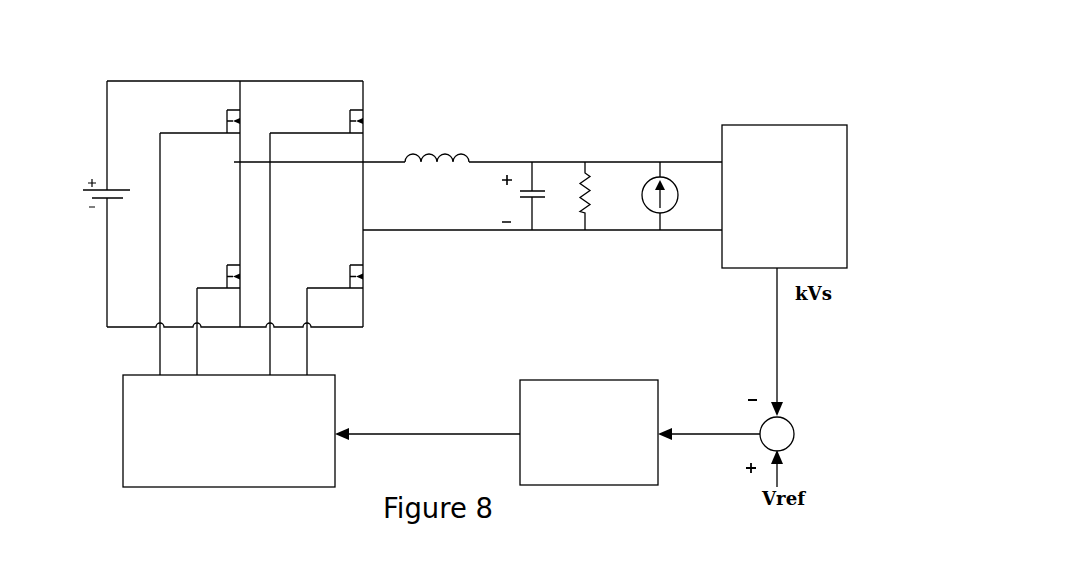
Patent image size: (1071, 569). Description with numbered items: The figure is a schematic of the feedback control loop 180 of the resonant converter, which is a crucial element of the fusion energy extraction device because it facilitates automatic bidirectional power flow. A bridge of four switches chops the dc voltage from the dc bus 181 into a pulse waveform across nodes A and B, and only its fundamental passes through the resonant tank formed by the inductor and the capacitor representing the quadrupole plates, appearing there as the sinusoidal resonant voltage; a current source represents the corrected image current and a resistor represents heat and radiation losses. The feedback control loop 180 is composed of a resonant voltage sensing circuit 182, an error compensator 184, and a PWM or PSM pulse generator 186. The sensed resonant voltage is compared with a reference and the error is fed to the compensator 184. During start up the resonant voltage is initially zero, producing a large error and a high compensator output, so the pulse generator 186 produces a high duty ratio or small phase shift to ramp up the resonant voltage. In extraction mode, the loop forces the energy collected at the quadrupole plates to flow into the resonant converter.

The feedback control loop 180 is at (733, 62).
The dc bus 181 is at (80, 227).
The resonant voltage sensing circuit 182 is at (722, 150).
The error compensator 184 is at (580, 380).
The PWM or PSM pulse generator 186 is at (123, 412).